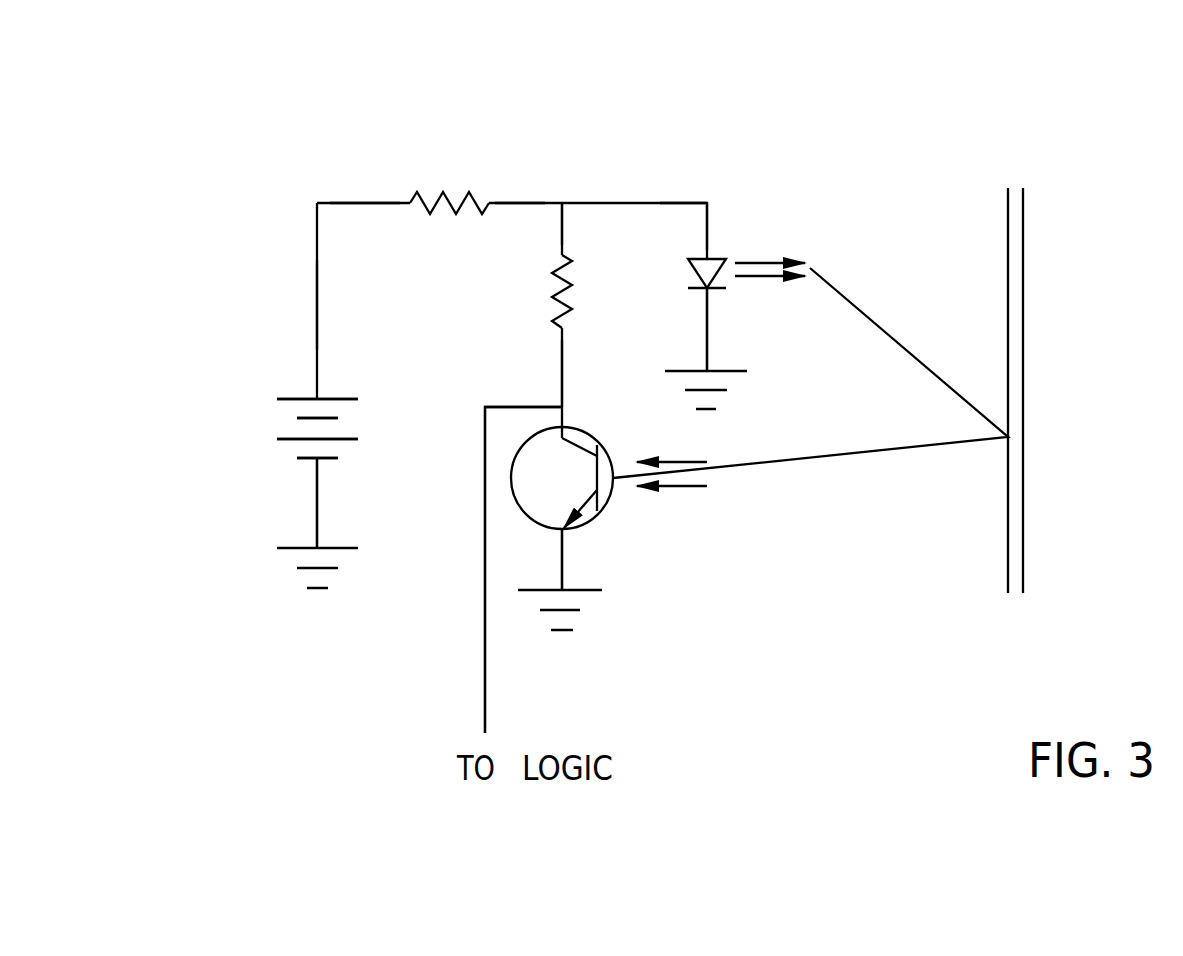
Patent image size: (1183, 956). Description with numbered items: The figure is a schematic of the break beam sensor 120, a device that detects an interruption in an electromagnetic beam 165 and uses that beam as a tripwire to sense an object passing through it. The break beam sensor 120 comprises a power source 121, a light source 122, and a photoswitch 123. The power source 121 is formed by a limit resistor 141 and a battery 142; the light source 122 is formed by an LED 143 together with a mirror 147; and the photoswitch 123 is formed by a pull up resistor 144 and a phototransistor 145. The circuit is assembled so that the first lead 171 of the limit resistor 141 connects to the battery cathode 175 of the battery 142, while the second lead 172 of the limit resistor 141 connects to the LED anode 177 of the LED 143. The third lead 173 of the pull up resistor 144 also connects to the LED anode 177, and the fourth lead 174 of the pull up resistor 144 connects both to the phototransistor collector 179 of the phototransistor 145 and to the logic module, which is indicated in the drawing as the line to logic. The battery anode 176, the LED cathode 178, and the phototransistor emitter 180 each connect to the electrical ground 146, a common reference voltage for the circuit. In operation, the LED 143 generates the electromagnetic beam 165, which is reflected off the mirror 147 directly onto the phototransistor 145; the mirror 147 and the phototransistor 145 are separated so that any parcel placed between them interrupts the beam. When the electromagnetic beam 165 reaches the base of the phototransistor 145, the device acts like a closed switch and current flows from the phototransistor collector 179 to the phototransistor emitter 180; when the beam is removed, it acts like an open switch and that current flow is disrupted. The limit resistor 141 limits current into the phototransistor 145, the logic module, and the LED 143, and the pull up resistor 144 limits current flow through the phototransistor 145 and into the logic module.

The break beam sensor 120 is at (200, 187).
The power source 121 is at (258, 397).
The light source 122 is at (678, 278).
The photoswitch 123 is at (592, 517).
The limit resistor 141 is at (445, 190).
The battery 142 is at (273, 436).
The LED 143 is at (720, 253).
The pull up resistor 144 is at (568, 278).
The phototransistor 145 is at (542, 485).
The electrical ground 146 is at (318, 588).
The mirror 147 is at (1023, 316).
The electromagnetic beam 165 is at (905, 347).
The first lead 171 is at (360, 203).
The second lead 172 is at (510, 203).
The third lead 173 is at (564, 232).
The fourth lead 174 is at (560, 380).
The battery cathode 175 is at (318, 303).
The battery anode 176 is at (317, 500).
The LED anode 177 is at (707, 218).
The LED cathode 178 is at (707, 330).
The phototransistor collector 179 is at (517, 452).
The phototransistor emitter 180 is at (562, 562).